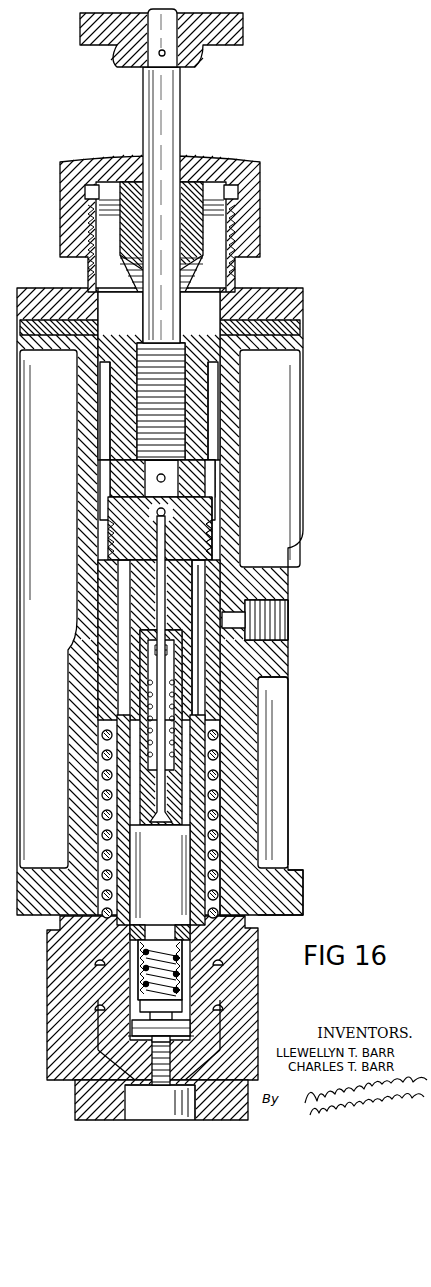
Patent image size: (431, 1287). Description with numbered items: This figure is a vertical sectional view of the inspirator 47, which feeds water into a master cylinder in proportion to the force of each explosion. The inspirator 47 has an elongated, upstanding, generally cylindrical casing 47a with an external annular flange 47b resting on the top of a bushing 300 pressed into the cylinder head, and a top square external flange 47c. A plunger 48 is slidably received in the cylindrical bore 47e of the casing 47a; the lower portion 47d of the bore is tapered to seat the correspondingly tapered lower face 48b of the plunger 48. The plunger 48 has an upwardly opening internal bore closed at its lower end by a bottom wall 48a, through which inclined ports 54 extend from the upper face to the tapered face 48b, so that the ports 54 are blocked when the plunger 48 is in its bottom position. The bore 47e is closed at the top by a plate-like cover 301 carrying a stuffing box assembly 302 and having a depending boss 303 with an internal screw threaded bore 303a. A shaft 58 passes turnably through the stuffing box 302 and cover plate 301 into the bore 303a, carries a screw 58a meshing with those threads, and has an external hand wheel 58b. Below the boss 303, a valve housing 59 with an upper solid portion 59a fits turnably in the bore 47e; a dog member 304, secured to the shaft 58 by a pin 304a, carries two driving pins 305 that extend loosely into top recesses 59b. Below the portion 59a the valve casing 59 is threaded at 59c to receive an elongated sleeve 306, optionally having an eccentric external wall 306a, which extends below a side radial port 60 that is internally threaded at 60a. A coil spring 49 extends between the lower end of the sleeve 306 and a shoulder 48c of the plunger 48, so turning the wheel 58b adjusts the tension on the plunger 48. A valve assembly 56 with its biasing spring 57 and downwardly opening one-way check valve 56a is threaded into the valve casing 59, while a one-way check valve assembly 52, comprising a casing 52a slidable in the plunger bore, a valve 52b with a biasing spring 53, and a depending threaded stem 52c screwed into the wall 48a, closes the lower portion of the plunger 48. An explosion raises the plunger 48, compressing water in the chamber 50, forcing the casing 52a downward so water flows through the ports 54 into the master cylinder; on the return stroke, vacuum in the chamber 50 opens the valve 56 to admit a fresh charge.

The inspirator 47 is at (265, 200).
The casing 47a is at (262, 850).
The external annular flange 47b is at (298, 898).
The top square external flange 47c is at (305, 330).
The lower portion of bore 47d is at (240, 1052).
The cylindrical bore 47e is at (226, 772).
The plunger 48 is at (210, 995).
The bottom wall 48a is at (160, 1102).
The tapered lower face 48b is at (118, 1083).
The shoulder 48c is at (225, 955).
The coil spring 49 is at (215, 832).
The chamber 50 is at (132, 895).
The one-way check valve assembly 52 is at (190, 978).
The casing 52a is at (142, 938).
The valve 52b is at (135, 1030).
The threaded stem 52c is at (142, 1025).
The biasing spring 53 is at (143, 970).
The inclined ports 54 is at (128, 1040).
The valve assembly 56 is at (138, 800).
The one-way check valve 56a is at (142, 862).
The biasing spring 57 is at (138, 750).
The shaft 58 is at (177, 106).
The screw 58a is at (180, 432).
The hand wheel 58b is at (215, 8).
The valve housing 59 is at (206, 540).
The upper solid portion 59a is at (230, 512).
The top recesses 59b is at (110, 498).
The threaded portion 59c is at (213, 568).
The side radial port 60 is at (250, 628).
The internal screw threads 60a is at (292, 625).
The bushing 300 is at (78, 1100).
The cover plate 301 is at (273, 287).
The stuffing box assembly 302 is at (190, 197).
The boss 303 is at (205, 372).
The screw threaded bore 303a is at (183, 446).
The dog member 304 is at (125, 468).
The pin 304a is at (160, 518).
The driving pins 305 is at (200, 480).
The sleeve 306 is at (100, 620).
The eccentric external wall 306a is at (220, 700).